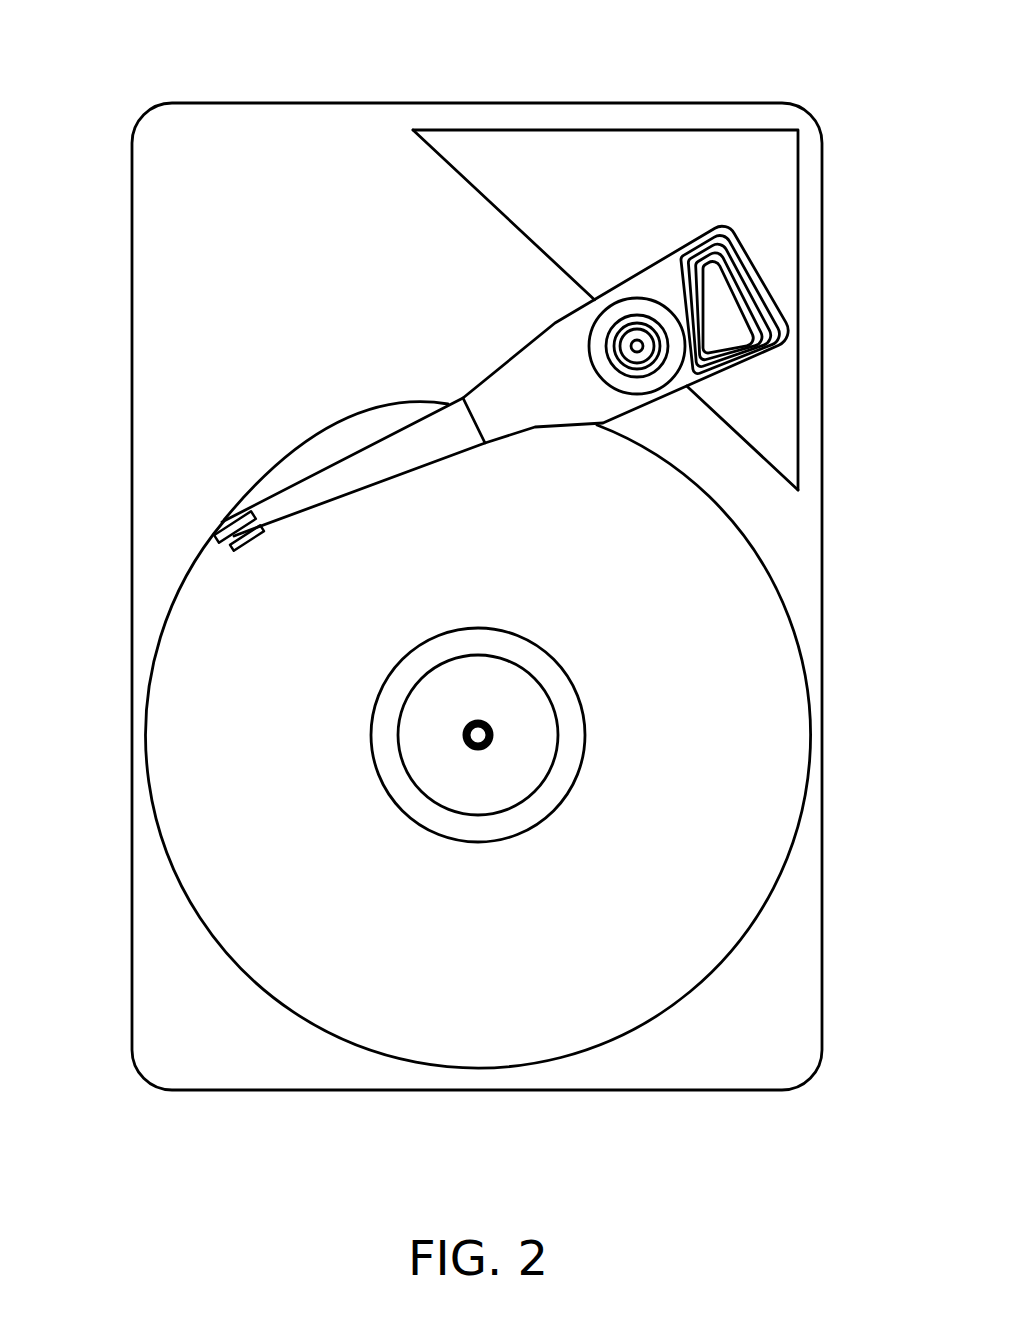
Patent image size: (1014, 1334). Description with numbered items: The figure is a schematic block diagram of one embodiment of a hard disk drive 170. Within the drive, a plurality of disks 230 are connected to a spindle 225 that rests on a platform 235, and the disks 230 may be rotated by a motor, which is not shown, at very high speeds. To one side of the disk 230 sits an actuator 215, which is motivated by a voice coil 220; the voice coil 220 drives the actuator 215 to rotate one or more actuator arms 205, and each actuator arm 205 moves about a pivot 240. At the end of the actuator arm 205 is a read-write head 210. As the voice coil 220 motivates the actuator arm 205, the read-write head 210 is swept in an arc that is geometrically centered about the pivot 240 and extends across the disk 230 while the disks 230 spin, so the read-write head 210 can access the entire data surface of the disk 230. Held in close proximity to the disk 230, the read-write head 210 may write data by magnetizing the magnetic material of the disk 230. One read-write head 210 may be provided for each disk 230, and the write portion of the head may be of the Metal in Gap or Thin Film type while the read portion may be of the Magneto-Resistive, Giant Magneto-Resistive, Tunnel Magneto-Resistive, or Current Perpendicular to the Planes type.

The hard disk drive 170 is at (103, 58).
The actuator arm 205 is at (418, 438).
The read-write head 210 is at (223, 525).
The actuator 215 is at (540, 337).
The voice coil 220 is at (692, 253).
The spindle 225 is at (523, 683).
The disk 230 is at (723, 963).
The platform 235 is at (655, 1092).
The pivot 240 is at (634, 348).